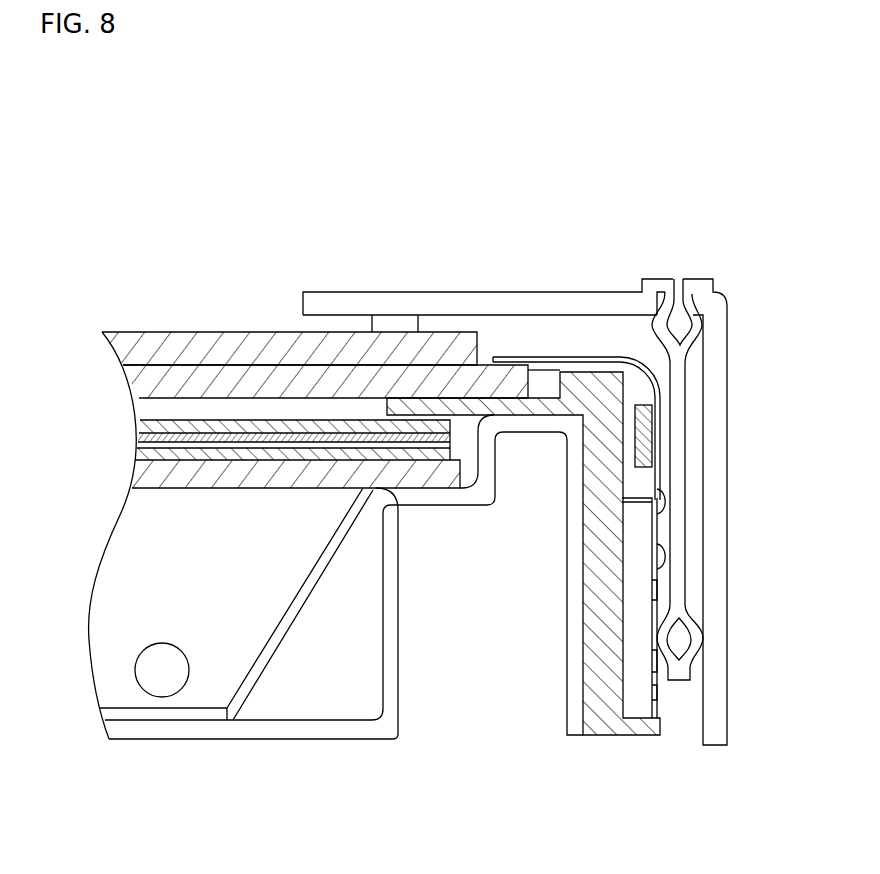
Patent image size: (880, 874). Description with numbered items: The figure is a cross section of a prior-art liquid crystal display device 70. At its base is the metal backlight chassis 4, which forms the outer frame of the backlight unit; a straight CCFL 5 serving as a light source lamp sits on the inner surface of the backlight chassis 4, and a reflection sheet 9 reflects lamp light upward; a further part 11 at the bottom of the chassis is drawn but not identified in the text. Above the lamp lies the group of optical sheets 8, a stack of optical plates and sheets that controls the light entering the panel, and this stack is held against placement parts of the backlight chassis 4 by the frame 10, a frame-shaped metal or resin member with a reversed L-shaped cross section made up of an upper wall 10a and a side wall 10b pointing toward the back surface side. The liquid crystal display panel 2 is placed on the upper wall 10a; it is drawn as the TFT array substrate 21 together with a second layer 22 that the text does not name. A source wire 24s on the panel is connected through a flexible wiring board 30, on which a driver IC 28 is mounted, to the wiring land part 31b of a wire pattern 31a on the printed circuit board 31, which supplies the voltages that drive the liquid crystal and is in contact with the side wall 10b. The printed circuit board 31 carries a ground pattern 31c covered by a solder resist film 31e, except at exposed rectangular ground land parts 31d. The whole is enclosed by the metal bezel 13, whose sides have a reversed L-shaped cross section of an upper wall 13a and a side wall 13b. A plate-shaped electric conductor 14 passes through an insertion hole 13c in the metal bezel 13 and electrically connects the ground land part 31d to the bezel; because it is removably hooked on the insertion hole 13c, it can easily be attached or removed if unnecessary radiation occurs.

The liquid crystal display device 70 is at (120, 248).
The liquid crystal display panel 2 is at (258, 331).
The TFT array substrate 21 is at (172, 377).
The second substrate 22 is at (221, 325).
The group of optical sheets 8 is at (123, 417).
The metal bezel 13 is at (462, 292).
The upper wall 13a is at (546, 300).
The side wall 13b is at (712, 747).
The insertion hole 13c is at (694, 324).
The electric conductor 14 is at (688, 468).
The source wire 24s is at (496, 355).
The flexible wiring board 30 is at (576, 352).
The driver IC 28 is at (638, 403).
The printed circuit board 31 is at (638, 707).
The wire pattern 31a is at (660, 558).
The wiring land part 31b is at (655, 496).
The ground pattern 31c is at (660, 690).
The ground land part 31d is at (658, 660).
The solder resist film 31e is at (658, 587).
The frame 10 is at (600, 737).
The upper wall 10a is at (471, 408).
The side wall 10b is at (603, 609).
The reflection sheet 9 is at (285, 605).
The CCFL 5 is at (160, 697).
The bottom plate 11 is at (255, 741).
The backlight chassis 4 is at (311, 740).